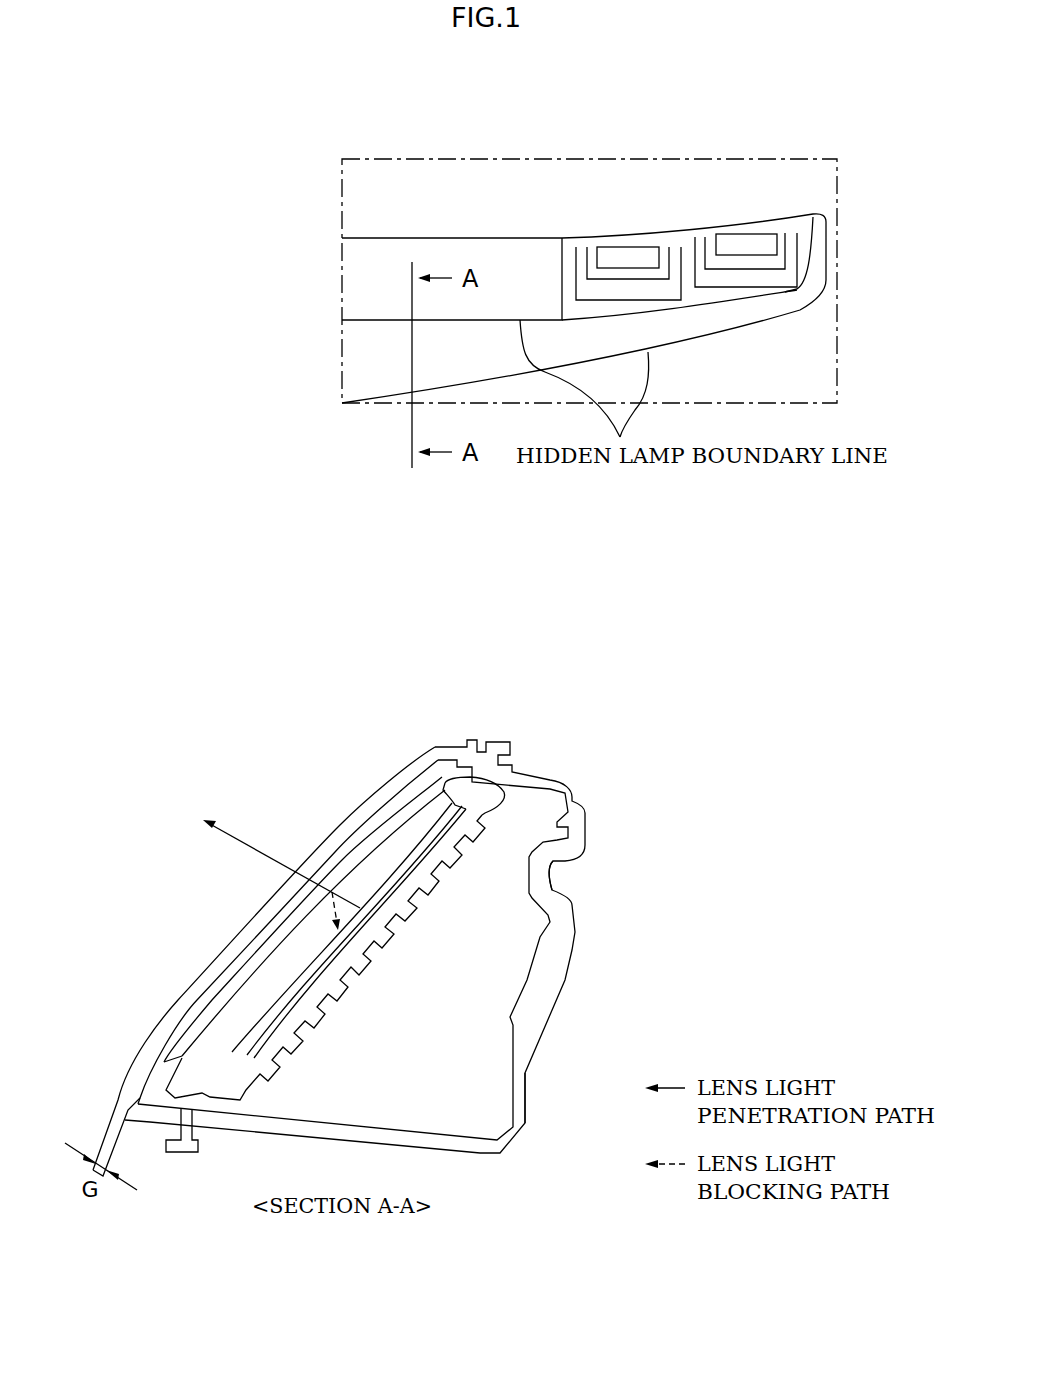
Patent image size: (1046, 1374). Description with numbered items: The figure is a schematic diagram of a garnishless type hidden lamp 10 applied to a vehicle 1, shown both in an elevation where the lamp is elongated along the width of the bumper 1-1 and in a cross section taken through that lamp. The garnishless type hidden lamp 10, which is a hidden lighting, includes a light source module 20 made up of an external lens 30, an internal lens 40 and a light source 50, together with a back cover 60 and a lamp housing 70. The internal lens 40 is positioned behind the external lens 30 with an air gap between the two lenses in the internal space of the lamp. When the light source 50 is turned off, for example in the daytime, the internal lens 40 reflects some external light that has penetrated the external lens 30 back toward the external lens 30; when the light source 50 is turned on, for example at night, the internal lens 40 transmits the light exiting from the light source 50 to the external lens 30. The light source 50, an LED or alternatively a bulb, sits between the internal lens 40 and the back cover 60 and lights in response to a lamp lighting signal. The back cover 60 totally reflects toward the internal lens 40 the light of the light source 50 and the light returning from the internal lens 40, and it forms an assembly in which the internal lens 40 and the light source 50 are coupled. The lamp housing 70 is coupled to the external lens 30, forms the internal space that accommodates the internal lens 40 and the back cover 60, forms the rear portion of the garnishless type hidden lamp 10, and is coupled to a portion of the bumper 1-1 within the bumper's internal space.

The vehicle 1 is at (338, 226).
The bumper 1-1 is at (762, 183).
The garnishless type hidden lamp 10 is at (363, 302).
The light source module 20 is at (582, 628).
The external lens 30 is at (364, 800).
The internal lens 40 is at (417, 800).
The light source 50 is at (490, 800).
The back cover 60 is at (532, 850).
The lamp housing 70 is at (527, 1042).